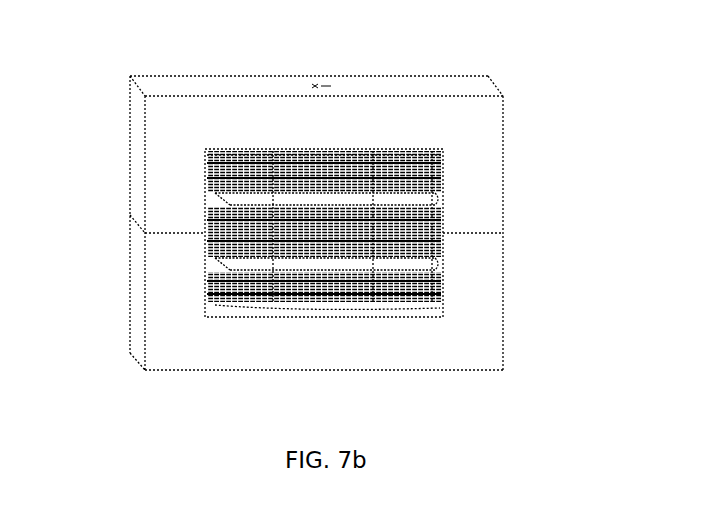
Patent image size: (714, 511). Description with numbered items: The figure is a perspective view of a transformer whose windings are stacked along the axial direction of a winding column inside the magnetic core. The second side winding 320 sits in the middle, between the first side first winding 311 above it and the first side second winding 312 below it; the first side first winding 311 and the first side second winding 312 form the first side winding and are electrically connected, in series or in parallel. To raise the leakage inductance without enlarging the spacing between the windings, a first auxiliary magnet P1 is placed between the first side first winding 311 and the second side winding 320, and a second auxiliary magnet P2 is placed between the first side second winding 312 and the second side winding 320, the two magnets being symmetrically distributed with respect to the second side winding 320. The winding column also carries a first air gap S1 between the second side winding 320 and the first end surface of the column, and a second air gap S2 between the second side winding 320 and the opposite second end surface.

The first side first winding 311 is at (235, 168).
The first side second winding 312 is at (245, 290).
The second side winding 320 is at (228, 228).
The first air gap S1 is at (323, 192).
The second air gap S2 is at (323, 263).
The first auxiliary magnet P1 is at (207, 193).
The second auxiliary magnet P2 is at (218, 266).